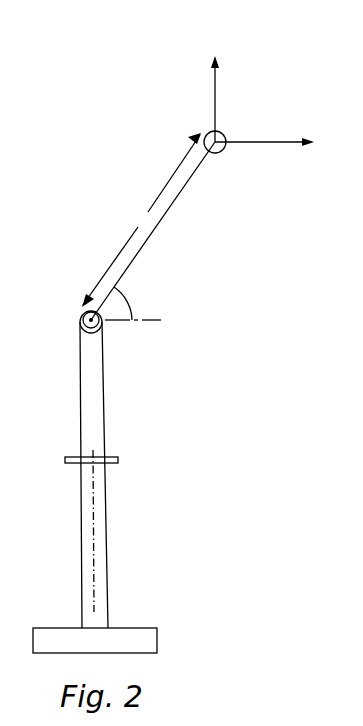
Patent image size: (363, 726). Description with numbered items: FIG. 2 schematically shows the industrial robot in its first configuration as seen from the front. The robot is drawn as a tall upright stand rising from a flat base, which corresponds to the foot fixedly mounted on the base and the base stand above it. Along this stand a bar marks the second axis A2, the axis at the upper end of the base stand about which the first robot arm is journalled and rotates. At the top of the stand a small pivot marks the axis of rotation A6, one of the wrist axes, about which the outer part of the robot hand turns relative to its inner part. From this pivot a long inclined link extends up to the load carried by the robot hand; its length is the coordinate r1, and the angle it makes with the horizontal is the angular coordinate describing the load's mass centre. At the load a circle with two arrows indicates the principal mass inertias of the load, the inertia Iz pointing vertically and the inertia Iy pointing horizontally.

The axis of rotation A6 is at (82, 320).
The second axis A2 is at (111, 461).
The principal mass inertia Iz is at (218, 82).
The principal mass inertia Iy is at (277, 149).
The mass centre coordinate r1 is at (145, 223).